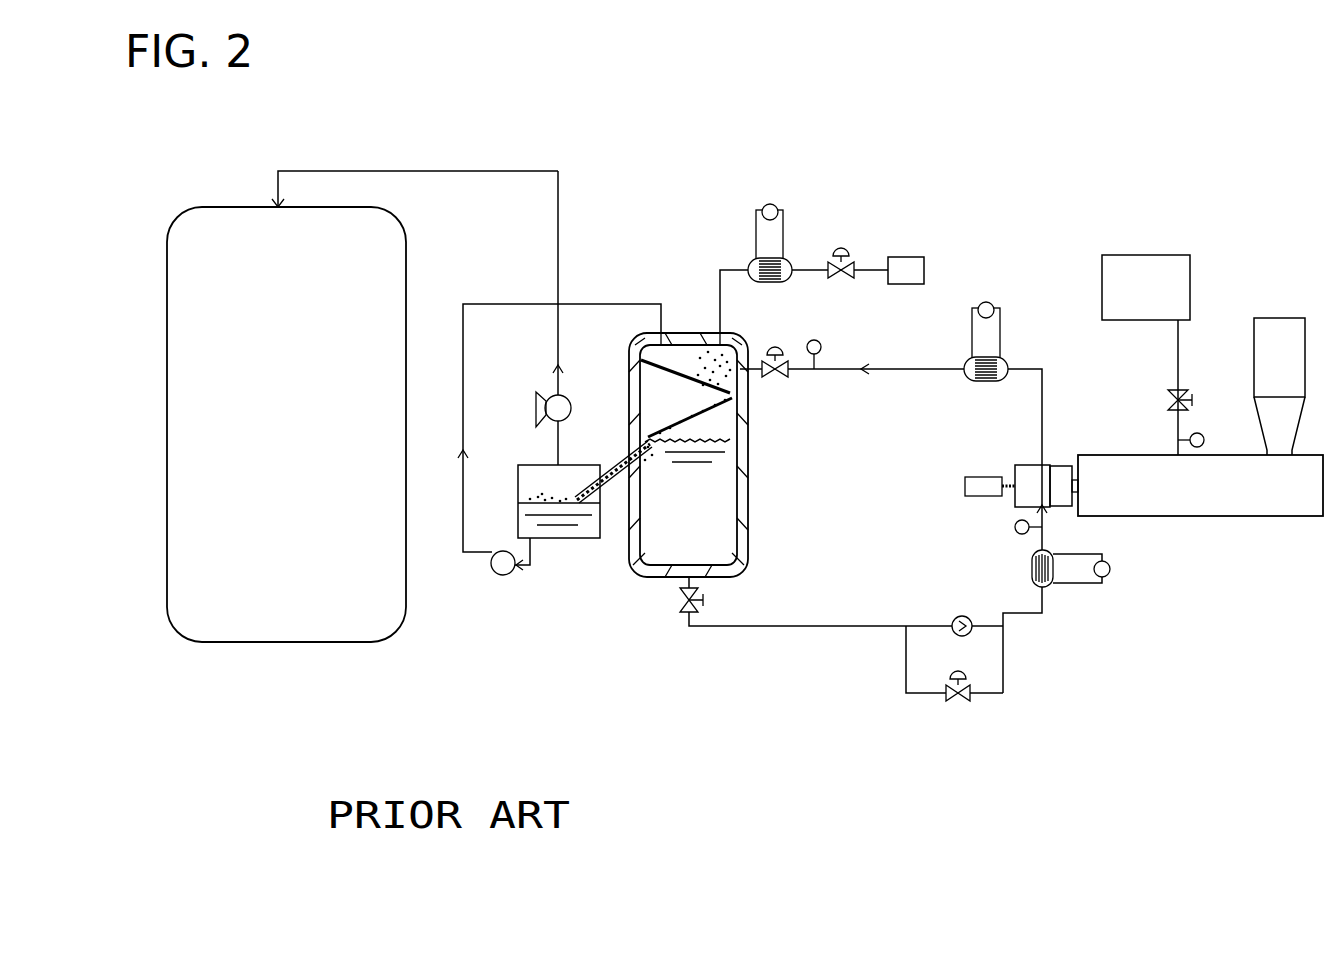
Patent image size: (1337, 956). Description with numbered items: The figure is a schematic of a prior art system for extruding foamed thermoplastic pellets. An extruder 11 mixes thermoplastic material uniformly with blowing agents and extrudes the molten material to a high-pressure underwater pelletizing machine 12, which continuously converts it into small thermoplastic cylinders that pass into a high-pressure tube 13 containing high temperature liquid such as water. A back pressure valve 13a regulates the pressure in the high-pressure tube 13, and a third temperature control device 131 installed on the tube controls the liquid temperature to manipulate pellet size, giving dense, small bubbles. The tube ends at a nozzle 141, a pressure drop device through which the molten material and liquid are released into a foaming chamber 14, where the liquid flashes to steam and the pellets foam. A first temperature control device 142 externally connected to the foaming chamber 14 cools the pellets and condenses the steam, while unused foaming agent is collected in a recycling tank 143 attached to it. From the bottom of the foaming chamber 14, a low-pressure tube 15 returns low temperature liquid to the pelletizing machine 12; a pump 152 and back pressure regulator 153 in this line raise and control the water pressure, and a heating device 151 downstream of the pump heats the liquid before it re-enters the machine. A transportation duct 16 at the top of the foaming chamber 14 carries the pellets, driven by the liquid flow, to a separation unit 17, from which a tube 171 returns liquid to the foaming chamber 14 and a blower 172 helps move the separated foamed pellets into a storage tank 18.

The extruder 11 is at (1192, 518).
The high-pressure underwater pelletizing machine 12 is at (1062, 465).
The high-pressure tube 13 is at (886, 362).
The back pressure valve 13a is at (778, 377).
The third temperature control device 131 is at (1008, 362).
The foaming chamber 14 is at (753, 450).
The nozzle 141 is at (758, 356).
The first temperature control device 142 is at (752, 264).
The recycling tank 143 is at (905, 257).
The low-pressure tube 15 is at (787, 628).
The heating device 151 is at (1050, 590).
The pump 152 is at (955, 612).
The back pressure regulator 153 is at (955, 705).
The transportation duct 16 is at (612, 462).
The separation unit 17 is at (575, 540).
The tube 171 is at (537, 304).
The blower 172 is at (568, 397).
The storage tank 18 is at (229, 207).